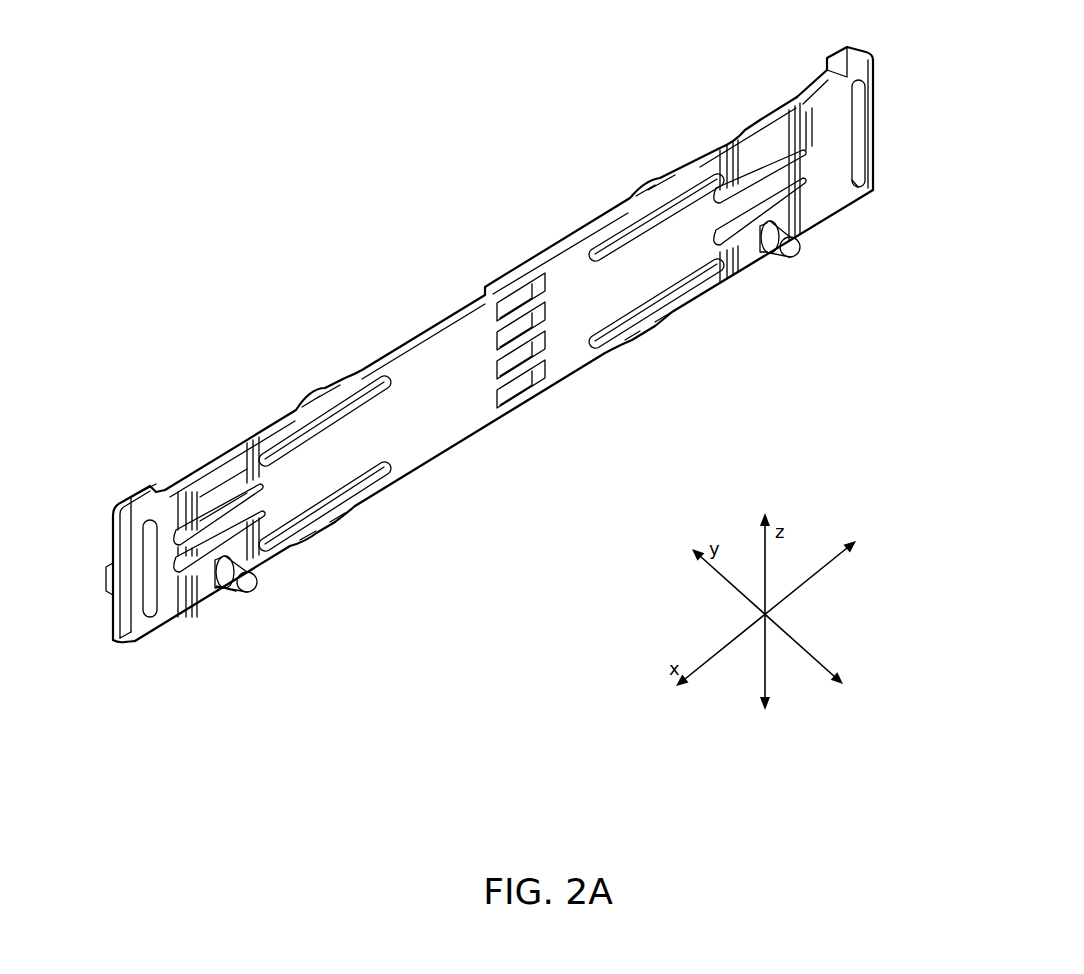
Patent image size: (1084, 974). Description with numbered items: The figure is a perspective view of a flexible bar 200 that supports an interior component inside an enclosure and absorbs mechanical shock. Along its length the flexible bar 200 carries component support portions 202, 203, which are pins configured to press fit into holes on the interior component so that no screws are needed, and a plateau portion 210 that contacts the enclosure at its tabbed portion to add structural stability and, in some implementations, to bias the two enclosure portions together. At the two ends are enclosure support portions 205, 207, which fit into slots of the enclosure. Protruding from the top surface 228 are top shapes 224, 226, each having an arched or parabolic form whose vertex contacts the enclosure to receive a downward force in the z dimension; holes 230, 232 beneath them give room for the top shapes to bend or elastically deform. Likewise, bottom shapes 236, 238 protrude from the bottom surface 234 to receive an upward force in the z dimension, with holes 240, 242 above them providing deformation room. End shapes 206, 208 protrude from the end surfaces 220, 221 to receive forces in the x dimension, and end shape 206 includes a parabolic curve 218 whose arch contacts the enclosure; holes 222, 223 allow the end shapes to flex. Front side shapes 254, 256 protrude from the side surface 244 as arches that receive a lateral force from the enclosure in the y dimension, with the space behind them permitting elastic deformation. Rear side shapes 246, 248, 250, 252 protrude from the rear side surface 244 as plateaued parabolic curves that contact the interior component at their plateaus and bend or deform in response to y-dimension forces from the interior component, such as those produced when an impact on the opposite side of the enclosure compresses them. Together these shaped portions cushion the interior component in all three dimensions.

The flexible bar 200 is at (397, 185).
The component support portion 202 is at (250, 597).
The component support portion 203 is at (785, 260).
The enclosure support portion 205 is at (140, 491).
The end shape 206 is at (133, 644).
The enclosure support portion 207 is at (842, 65).
The end shape 208 is at (870, 162).
The plateau portion 210 is at (505, 263).
The parabolic curve 218 is at (112, 583).
The end surface 220 is at (148, 612).
The end surface 221 is at (857, 176).
The hole 222 is at (151, 528).
The hole 223 is at (872, 127).
The top shape 224 is at (323, 397).
The top shape 226 is at (655, 182).
The top surface 228 is at (422, 333).
The hole 230 is at (307, 417).
The hole 232 is at (642, 206).
The bottom surface 234 is at (460, 447).
The bottom shape 236 is at (322, 523).
The bottom shape 238 is at (650, 327).
The hole 240 is at (358, 496).
The hole 242 is at (654, 307).
The side surface 244 is at (318, 477).
The rear side shape 246 is at (800, 233).
The rear side shape 248 is at (795, 125).
The rear side shape 250 is at (232, 477).
The rear side shape 252 is at (222, 588).
The front side shape 254 is at (190, 545).
The front side shape 256 is at (747, 198).